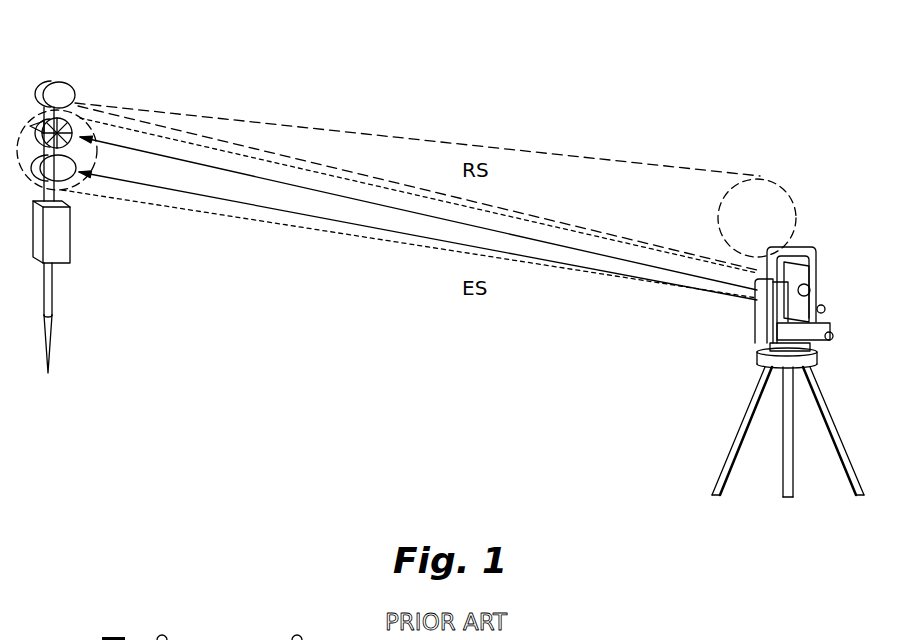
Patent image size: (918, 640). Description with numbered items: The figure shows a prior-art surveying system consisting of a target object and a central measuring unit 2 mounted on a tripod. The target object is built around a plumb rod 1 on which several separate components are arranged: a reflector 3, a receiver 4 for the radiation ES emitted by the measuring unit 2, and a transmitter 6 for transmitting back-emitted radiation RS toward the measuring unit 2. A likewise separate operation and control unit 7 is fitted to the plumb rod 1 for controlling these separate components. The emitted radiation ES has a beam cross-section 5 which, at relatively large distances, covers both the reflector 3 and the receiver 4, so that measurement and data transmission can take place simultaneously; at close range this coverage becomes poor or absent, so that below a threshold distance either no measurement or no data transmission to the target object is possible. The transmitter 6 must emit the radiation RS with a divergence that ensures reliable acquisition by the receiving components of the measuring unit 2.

The plumb rod 1 is at (97, 240).
The central measuring unit 2 is at (749, 372).
The reflector 3 is at (121, 102).
The receiver 4 is at (98, 206).
The beam cross-section 5 is at (418, 194).
The transmitter 6 is at (121, 59).
The operation and control unit 7 is at (99, 252).